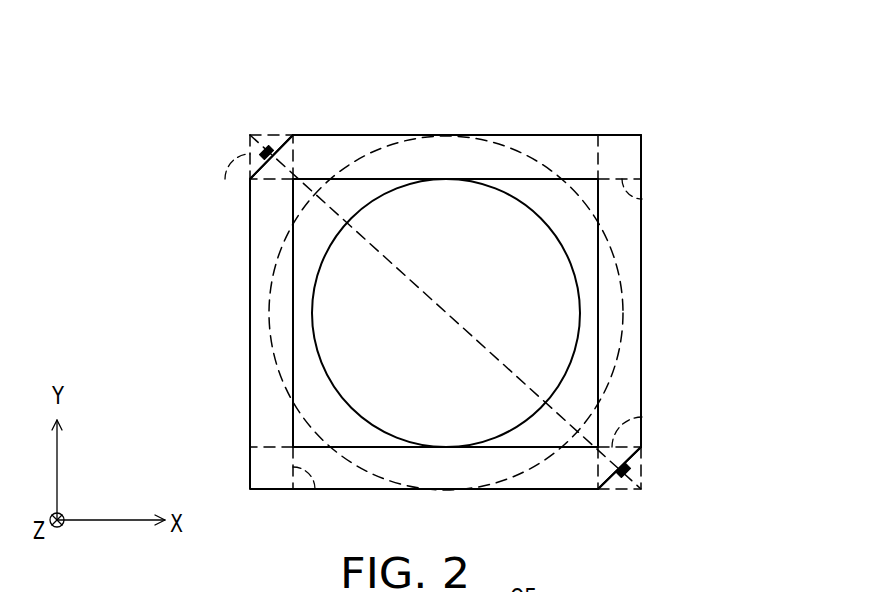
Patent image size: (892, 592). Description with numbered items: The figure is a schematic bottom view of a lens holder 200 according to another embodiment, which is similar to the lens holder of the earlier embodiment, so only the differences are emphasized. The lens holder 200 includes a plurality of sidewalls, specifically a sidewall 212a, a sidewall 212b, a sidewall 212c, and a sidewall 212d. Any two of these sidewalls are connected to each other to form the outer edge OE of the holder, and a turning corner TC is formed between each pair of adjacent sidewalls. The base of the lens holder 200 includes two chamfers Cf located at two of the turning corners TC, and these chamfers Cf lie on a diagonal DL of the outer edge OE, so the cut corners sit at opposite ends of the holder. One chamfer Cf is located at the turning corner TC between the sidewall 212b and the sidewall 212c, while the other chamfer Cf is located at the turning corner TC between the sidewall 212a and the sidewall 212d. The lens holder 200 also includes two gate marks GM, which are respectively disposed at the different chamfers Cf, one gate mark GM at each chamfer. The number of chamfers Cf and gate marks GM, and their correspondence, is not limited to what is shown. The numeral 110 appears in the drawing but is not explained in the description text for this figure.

The display device / panel frame 110 is at (640, 102).
The lens holder 200 is at (727, 567).
The sidewall 212a is at (550, 477).
The sidewall 212b is at (257, 380).
The sidewall 212c is at (546, 152).
The sidewall 212d is at (626, 251).
The outer edge OE is at (386, 130).
The chamfers Cf is at (284, 132).
The gate marks GM is at (260, 145).
The turning corner TC is at (226, 175).
The diagonal DL is at (498, 362).